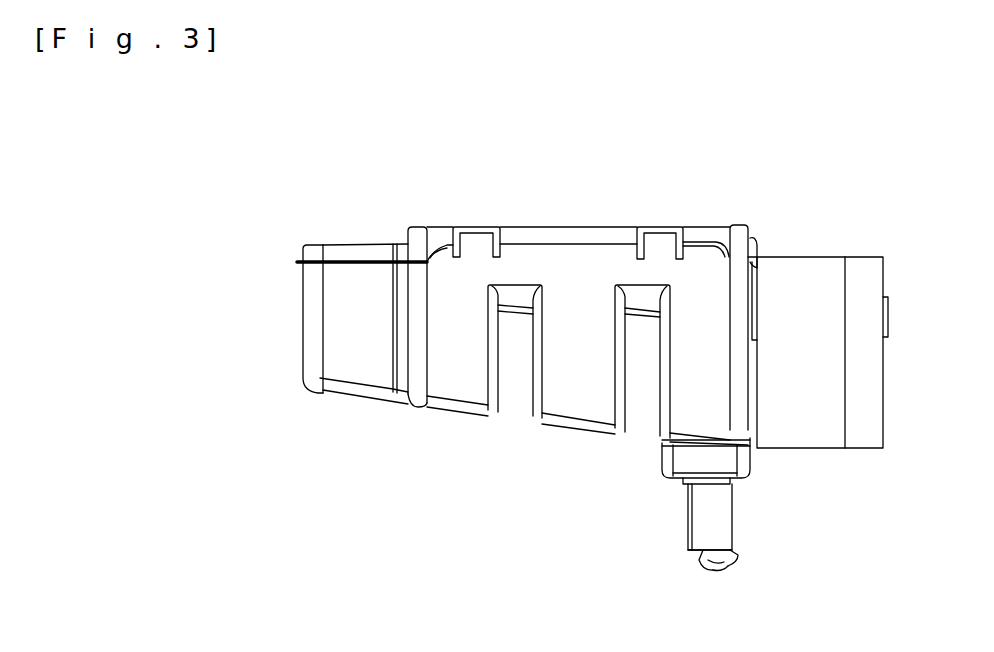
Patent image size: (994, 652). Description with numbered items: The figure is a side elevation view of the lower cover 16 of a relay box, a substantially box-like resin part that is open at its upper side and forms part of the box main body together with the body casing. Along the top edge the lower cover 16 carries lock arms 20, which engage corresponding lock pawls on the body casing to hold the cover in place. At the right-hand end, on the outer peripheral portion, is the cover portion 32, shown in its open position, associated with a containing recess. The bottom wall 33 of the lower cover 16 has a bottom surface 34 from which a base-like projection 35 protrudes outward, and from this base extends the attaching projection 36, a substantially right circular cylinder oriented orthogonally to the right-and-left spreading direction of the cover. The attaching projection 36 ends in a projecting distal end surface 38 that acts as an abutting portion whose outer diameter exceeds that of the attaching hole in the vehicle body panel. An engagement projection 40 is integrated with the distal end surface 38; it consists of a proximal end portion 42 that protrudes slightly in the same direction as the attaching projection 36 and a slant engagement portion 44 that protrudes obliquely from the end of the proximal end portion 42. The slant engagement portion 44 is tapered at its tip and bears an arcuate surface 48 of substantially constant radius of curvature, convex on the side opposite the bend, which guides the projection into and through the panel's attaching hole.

The lower cover 16 is at (763, 176).
The lock arms 20 is at (473, 230).
The cover portion 32 is at (820, 303).
The bottom wall 33 is at (713, 473).
The bottom surface 34 is at (679, 482).
The base-like projection 35 is at (684, 464).
The attaching projection 36 is at (703, 528).
The projecting distal end surface 38 is at (688, 560).
The engagement projection 40 is at (752, 581).
The proximal end portion 42 is at (703, 556).
The slant engagement portion 44 is at (709, 567).
The arcuate surface 48 is at (743, 554).